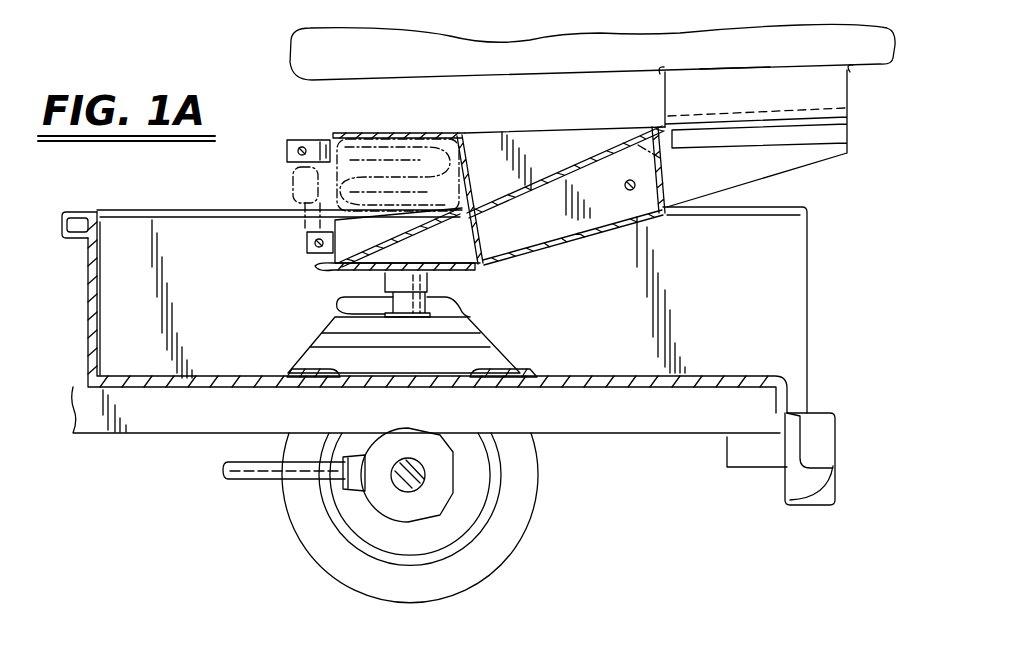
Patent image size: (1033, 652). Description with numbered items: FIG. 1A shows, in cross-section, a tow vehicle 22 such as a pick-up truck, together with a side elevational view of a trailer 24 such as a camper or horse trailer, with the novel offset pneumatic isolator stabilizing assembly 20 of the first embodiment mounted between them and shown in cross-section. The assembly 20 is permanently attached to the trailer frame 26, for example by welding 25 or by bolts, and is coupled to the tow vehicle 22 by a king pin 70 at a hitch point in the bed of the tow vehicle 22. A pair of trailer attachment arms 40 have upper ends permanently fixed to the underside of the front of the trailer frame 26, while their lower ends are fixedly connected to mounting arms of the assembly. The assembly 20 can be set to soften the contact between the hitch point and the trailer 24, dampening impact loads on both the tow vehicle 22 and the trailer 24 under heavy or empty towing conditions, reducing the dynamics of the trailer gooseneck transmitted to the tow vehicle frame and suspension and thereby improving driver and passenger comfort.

The pneumatic isolator stabilizing assembly 20 is at (497, 281).
The tow vehicle 22 is at (78, 325).
The trailer 24 is at (284, 69).
The welding 25 is at (660, 73).
The trailer frame 26 is at (733, 68).
The trailer attachment arms 40 is at (812, 96).
The king pin 70 is at (400, 303).